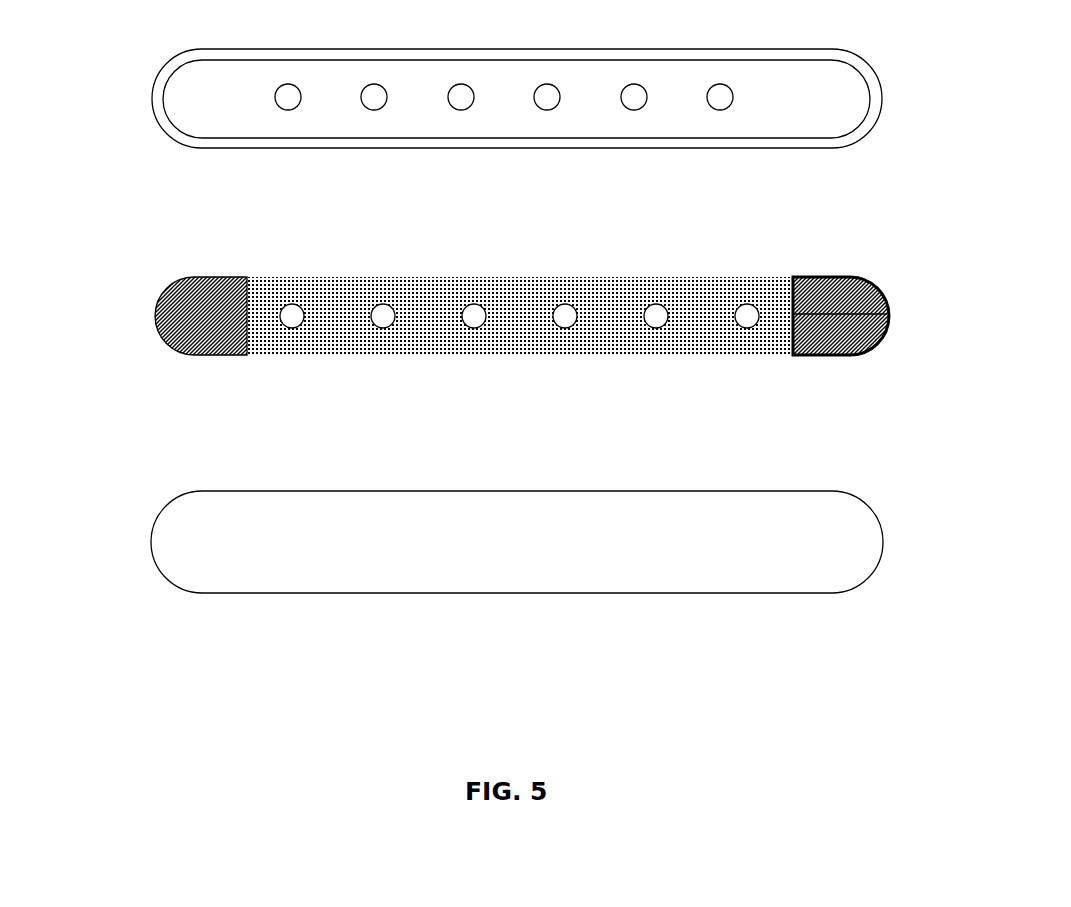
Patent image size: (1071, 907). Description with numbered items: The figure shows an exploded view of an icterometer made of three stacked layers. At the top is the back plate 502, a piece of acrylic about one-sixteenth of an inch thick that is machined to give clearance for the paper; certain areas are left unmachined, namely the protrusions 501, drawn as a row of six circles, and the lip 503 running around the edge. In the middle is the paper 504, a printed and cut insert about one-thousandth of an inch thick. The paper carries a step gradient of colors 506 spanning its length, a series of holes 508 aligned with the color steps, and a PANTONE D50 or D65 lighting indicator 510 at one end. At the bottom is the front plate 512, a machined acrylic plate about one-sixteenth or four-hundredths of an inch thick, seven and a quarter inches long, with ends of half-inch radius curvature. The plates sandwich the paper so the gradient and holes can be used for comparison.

The protrusions 501 is at (298, 95).
The back plate 502 is at (155, 80).
The lip 503 is at (460, 57).
The paper 504 is at (182, 278).
The step gradient of colors 506 is at (789, 355).
The holes 508 is at (297, 305).
The lighting indicator 510 is at (845, 275).
The front plate 512 is at (158, 514).